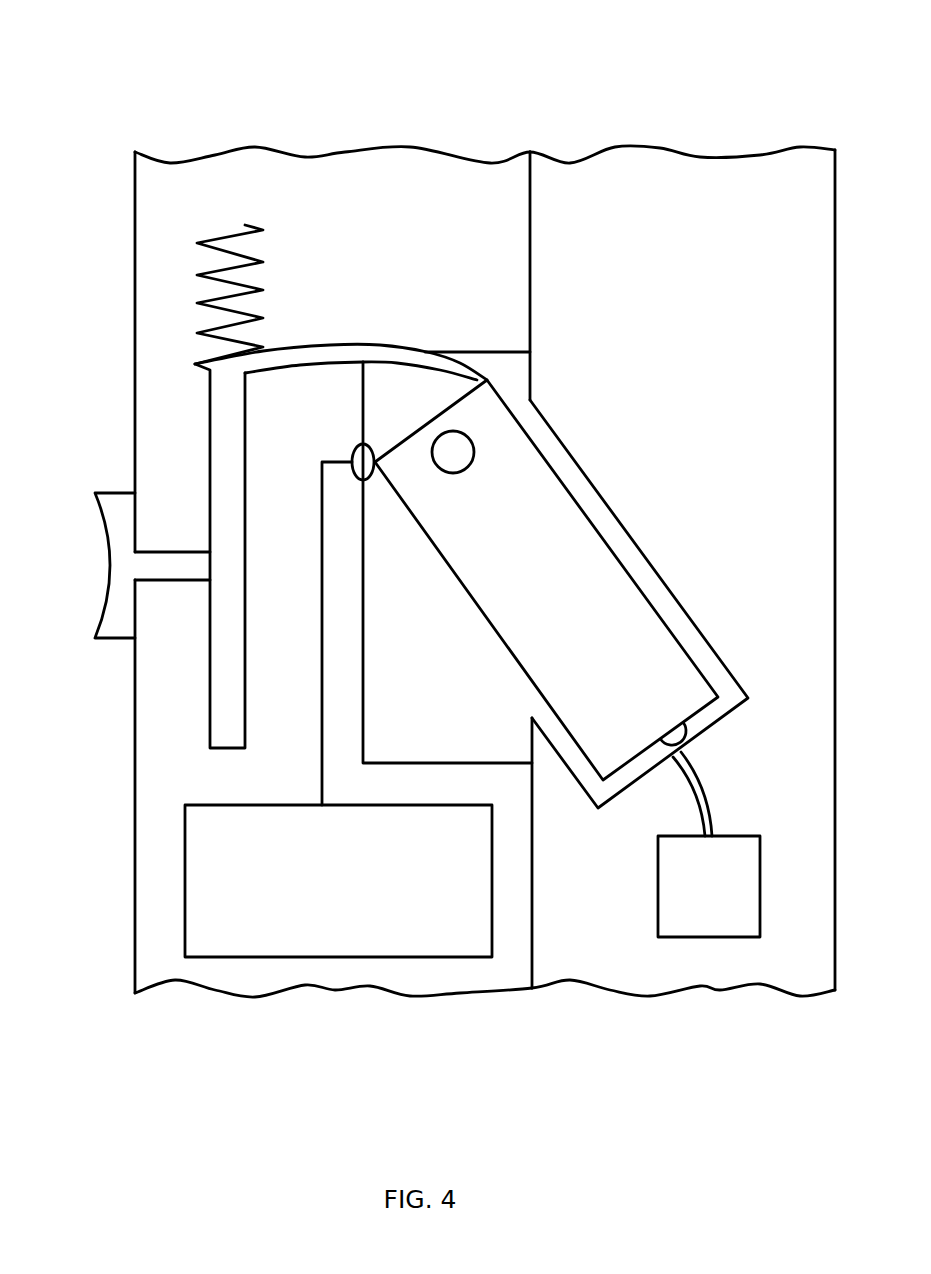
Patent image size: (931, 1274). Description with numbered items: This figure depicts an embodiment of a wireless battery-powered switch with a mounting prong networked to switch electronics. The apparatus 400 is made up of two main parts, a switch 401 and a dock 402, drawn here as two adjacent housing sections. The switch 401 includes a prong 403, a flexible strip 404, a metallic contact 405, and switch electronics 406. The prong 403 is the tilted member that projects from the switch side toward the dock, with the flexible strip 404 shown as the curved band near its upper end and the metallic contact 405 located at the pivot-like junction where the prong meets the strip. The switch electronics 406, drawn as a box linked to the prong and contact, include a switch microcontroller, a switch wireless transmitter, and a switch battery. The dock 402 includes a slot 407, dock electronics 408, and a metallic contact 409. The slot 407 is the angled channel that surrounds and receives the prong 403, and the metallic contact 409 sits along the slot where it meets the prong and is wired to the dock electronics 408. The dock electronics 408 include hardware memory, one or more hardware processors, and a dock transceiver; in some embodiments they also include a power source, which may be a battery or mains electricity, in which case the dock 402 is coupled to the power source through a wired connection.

The apparatus 400 is at (114, 52).
The switch 401 is at (380, 152).
The dock 402 is at (707, 152).
The prong 403 is at (542, 625).
The flexible strip 404 is at (315, 347).
The metallic contact 405 is at (354, 447).
The switch electronics 406 is at (305, 896).
The slot 407 is at (678, 598).
The dock electronics 408 is at (685, 901).
The metallic contact 409 is at (680, 748).